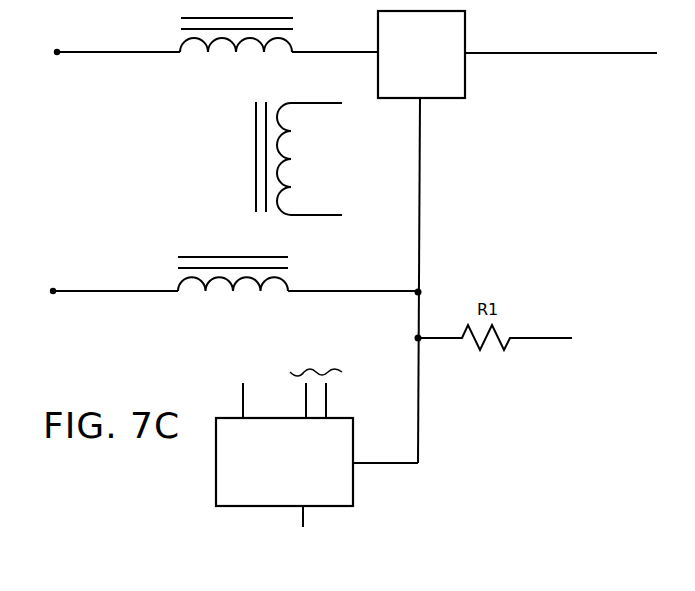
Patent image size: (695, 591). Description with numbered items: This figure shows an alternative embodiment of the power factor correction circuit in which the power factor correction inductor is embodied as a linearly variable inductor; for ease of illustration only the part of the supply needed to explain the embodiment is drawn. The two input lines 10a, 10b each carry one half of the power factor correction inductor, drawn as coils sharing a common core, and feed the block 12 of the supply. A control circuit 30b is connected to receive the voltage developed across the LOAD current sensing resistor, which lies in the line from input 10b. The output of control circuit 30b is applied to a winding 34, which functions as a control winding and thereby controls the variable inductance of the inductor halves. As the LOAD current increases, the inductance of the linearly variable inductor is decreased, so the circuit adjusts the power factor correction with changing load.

The supply input terminal 10a is at (214, 51).
The supply input terminal 10b is at (232, 290).
The power supply block 12 is at (447, 80).
The control winding 34 is at (299, 158).
The control circuit 30b is at (338, 439).